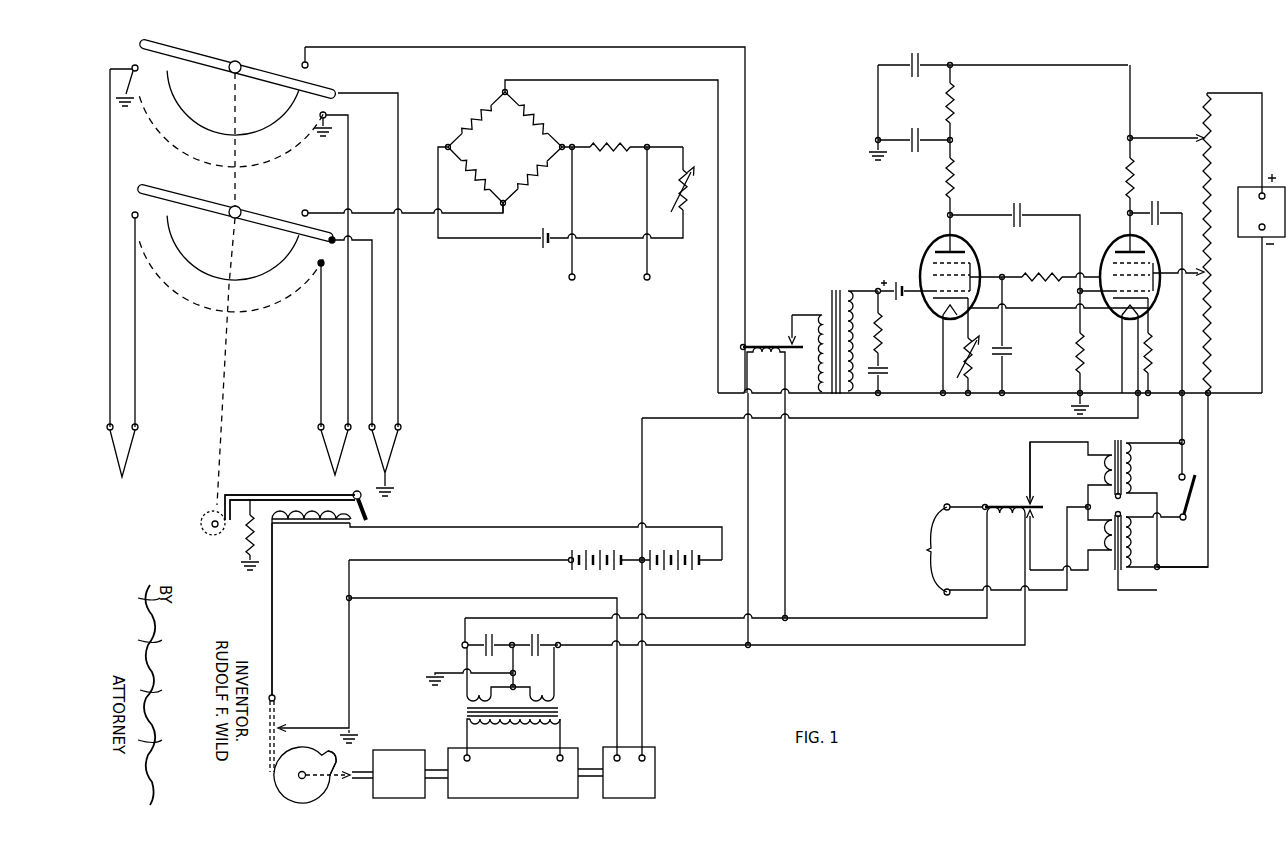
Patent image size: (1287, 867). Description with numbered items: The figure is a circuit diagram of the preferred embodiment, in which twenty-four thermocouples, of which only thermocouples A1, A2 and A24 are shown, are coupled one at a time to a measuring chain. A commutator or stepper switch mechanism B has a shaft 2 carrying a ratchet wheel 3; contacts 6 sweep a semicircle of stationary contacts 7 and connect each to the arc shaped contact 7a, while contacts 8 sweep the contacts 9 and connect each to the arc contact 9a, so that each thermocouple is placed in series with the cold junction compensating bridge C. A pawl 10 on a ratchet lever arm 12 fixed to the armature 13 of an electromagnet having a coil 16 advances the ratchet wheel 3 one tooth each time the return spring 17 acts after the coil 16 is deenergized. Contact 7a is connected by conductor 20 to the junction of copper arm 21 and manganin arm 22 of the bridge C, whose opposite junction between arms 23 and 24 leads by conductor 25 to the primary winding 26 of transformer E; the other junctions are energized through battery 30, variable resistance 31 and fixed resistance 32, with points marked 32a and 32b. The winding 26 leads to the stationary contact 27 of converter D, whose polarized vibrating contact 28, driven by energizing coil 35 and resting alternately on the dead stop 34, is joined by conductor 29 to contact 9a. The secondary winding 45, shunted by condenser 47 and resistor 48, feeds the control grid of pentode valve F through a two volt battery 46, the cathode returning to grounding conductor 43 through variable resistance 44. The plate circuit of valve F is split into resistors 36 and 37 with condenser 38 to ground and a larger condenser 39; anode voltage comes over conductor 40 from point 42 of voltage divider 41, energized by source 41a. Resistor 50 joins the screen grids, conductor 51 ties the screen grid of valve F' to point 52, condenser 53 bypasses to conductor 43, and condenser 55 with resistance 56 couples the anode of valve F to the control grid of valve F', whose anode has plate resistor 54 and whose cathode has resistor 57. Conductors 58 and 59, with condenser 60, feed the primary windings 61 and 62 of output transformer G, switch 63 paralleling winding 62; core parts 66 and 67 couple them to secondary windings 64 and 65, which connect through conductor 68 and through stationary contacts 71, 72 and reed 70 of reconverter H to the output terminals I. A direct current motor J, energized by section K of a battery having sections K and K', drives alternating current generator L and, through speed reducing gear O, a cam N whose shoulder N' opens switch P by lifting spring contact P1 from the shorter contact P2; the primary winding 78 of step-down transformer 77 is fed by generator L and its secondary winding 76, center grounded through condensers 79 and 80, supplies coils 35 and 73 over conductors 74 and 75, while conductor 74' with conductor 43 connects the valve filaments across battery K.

The shaft 2 is at (241, 67).
The ratchet wheel 3 is at (203, 515).
The contact member 6 is at (302, 212).
The stationary contacts 7 is at (135, 213).
The stationary arc shaped contact 7a is at (210, 252).
The contact 8 is at (302, 64).
The stationary contacts 9 is at (133, 66).
The stationary arc shaped contact 9a is at (205, 100).
The pawl 10 is at (226, 498).
The ratchet lever arm 12 is at (270, 494).
The armature 13 is at (370, 512).
The coil 16 is at (298, 528).
The return spring 17 is at (244, 540).
The conductor 20 is at (455, 215).
The bridge arm 21 is at (472, 182).
The bridge arm 22 is at (526, 176).
The bridge arm 23 is at (542, 116).
The bridge arm 24 is at (480, 120).
The conductor 25 is at (718, 300).
The primary winding 26 is at (818, 388).
The stationary contact 27 is at (790, 338).
The vibrating contact 28 is at (778, 345).
The conductor 29 is at (748, 223).
The battery 30 is at (546, 230).
The variable resistance 31 is at (689, 185).
The fixed resistance 32 is at (609, 143).
The terminal 32a is at (575, 276).
The terminal 32b is at (650, 276).
The dead contact 34 is at (818, 370).
The energizing coil 35 is at (766, 371).
The resistor 36 is at (957, 183).
The resistor 37 is at (957, 107).
The condenser 38 is at (918, 130).
The condenser 39 is at (919, 60).
The conductor 40 is at (1160, 138).
The voltage divider 41 is at (1211, 292).
The source of unidirectional voltage 41a is at (1277, 221).
The point 42 is at (1198, 142).
The grounding conductor 43 is at (900, 393).
The variable resistance 44 is at (977, 350).
The secondary winding 45 is at (852, 315).
The battery 46 is at (899, 281).
The condenser 47 is at (889, 369).
The resistor 48 is at (886, 330).
The resistor 50 is at (1028, 276).
The conductor 51 is at (1156, 265).
The point 52 is at (1210, 270).
The condenser 53 is at (1013, 351).
The plate circuit resistor 54 is at (1134, 184).
The condenser 55 is at (1018, 205).
The resistance 56 is at (1087, 355).
The resistor 57 is at (1151, 346).
The conductor 58 is at (1210, 422).
The conductor 59 is at (1178, 414).
The condenser 60 is at (1158, 207).
The primary winding 61 is at (1137, 466).
The second primary winding 62 is at (1140, 556).
The switch 63 is at (1188, 492).
The secondary winding 64 is at (1100, 460).
The secondary winding 65 is at (1100, 553).
The core part 66 is at (1117, 440).
The core part 67 is at (1116, 572).
The conductor 68 is at (1035, 595).
The vibrating contact 70 is at (1012, 505).
The stationary contact 71 is at (1033, 503).
The stationary contact 72 is at (1034, 514).
The energizing coil 73 is at (994, 523).
The terminal conductor 74 is at (726, 567).
The conductor 74' is at (890, 421).
The terminal conductor 75 is at (686, 645).
The secondary winding 76 is at (520, 693).
The step-down transformer 77 is at (458, 716).
The primary winding 78 is at (497, 730).
The condenser 79 is at (493, 645).
The condenser 80 is at (539, 645).
The thermocouple A1 is at (392, 462).
The thermocouple A2 is at (328, 462).
The thermocouple A24 is at (128, 462).
The commutator or stepper switch mechanism B is at (420, 263).
The cold junction temperature compensating bridge C is at (464, 108).
The converter D is at (708, 349).
The transformer E is at (815, 295).
The electronic amplifying valve F is at (941, 301).
The electronic amplifying valve F' is at (1115, 283).
The coupling transformer G is at (1220, 495).
The reconverter H is at (985, 477).
The output terminals I is at (950, 549).
The direct current motor J is at (634, 783).
The battery section K is at (497, 551).
The battery section K' is at (682, 550).
The alternating current generator L is at (518, 783).
The switch operating cam N is at (314, 775).
The shoulder N' is at (347, 759).
The speed reducing gear O is at (406, 783).
The switch P is at (290, 690).
The flexible spring contact P1 is at (268, 716).
The switch contact P2 is at (292, 727).